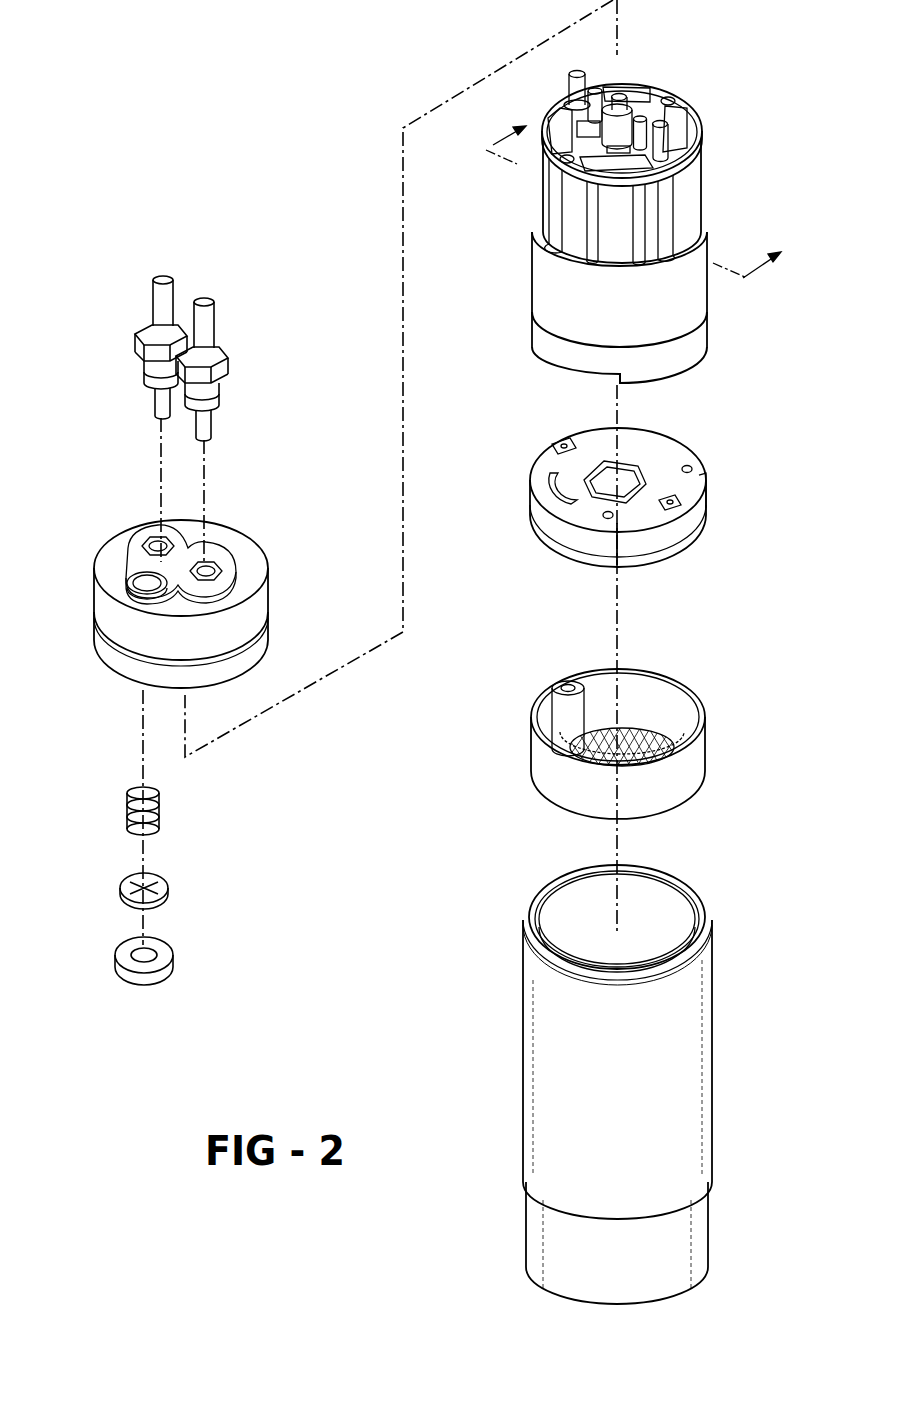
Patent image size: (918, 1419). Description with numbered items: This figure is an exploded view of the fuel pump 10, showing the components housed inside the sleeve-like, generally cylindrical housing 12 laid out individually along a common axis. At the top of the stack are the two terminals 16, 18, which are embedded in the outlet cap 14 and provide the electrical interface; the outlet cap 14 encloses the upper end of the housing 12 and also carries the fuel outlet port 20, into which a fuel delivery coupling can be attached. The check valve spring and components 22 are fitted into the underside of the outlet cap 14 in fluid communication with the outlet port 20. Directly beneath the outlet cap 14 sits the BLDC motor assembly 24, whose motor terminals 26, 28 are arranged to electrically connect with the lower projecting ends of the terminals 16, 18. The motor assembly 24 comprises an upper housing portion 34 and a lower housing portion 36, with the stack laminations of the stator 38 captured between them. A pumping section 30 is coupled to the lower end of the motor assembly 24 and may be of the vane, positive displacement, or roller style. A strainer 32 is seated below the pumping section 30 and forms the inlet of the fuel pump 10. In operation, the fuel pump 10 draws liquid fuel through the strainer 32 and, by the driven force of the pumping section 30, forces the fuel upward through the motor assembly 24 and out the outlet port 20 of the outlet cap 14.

The fuel pump 10 is at (156, 187).
The housing 12 is at (703, 1070).
The outlet cap 14 is at (95, 598).
The terminal 16 is at (157, 296).
The terminal 18 is at (206, 325).
The fuel outlet port 20 is at (142, 580).
The check valve spring and components 22 is at (98, 787).
The BLDC motor assembly 24 is at (702, 192).
The motor terminal 26 is at (596, 90).
The motor terminal 28 is at (641, 117).
The pumping section 30 is at (690, 446).
The strainer 32 is at (535, 752).
The upper housing portion 34 is at (552, 200).
The lower housing portion 36 is at (683, 348).
The stator 38 is at (532, 267).